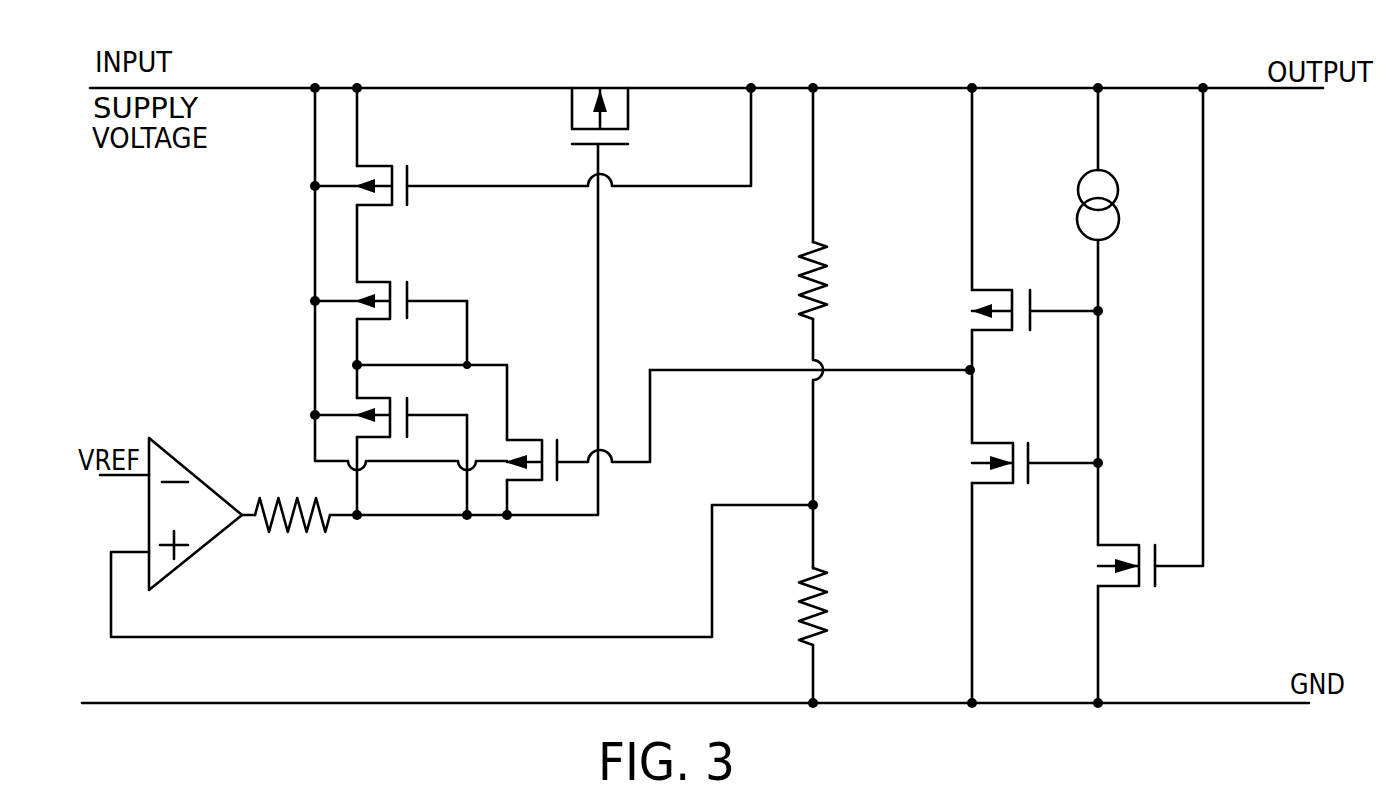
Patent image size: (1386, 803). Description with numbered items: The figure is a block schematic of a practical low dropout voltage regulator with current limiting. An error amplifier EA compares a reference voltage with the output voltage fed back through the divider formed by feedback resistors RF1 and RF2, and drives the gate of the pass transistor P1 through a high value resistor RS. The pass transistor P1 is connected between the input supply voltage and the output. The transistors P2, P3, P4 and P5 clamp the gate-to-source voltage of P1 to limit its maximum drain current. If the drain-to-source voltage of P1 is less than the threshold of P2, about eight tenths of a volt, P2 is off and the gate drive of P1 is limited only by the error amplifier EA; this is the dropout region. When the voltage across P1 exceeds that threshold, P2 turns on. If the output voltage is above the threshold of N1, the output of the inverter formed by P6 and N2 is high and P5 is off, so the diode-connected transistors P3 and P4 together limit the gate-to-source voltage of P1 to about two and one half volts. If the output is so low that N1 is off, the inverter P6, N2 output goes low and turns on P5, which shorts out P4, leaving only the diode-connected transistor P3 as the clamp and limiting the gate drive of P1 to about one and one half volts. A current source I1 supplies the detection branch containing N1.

The pass transistor P1 is at (600, 95).
The transistor P2 is at (533, 146).
The transistor P3 is at (391, 285).
The transistor P4 is at (391, 451).
The transistor P5 is at (541, 438).
The transistor P6 is at (1015, 310).
The transistor N1 is at (1134, 588).
The transistor N2 is at (1035, 490).
The feedback resistor RF1 is at (783, 296).
The feedback resistor RF2 is at (782, 604).
The high value resistor RS is at (292, 497).
The current source I1 is at (1121, 205).
The error amplifier EA is at (242, 535).